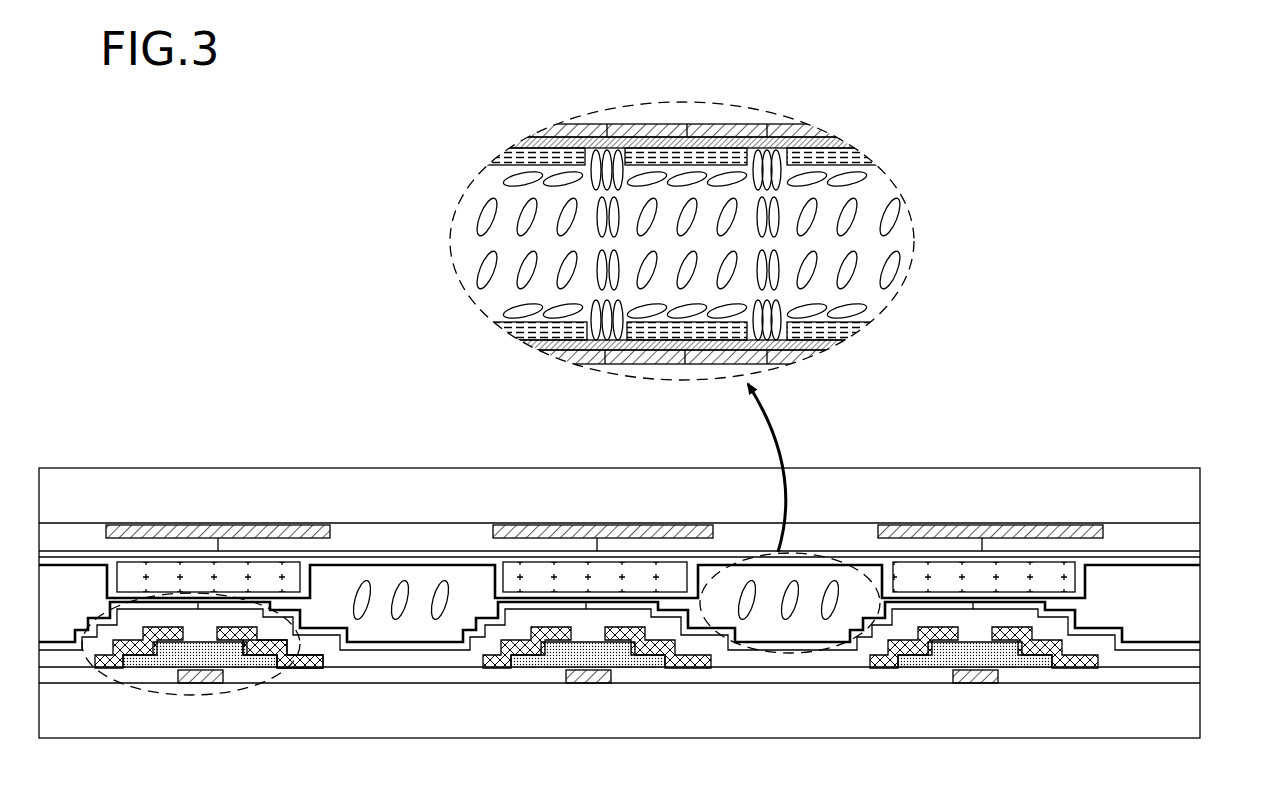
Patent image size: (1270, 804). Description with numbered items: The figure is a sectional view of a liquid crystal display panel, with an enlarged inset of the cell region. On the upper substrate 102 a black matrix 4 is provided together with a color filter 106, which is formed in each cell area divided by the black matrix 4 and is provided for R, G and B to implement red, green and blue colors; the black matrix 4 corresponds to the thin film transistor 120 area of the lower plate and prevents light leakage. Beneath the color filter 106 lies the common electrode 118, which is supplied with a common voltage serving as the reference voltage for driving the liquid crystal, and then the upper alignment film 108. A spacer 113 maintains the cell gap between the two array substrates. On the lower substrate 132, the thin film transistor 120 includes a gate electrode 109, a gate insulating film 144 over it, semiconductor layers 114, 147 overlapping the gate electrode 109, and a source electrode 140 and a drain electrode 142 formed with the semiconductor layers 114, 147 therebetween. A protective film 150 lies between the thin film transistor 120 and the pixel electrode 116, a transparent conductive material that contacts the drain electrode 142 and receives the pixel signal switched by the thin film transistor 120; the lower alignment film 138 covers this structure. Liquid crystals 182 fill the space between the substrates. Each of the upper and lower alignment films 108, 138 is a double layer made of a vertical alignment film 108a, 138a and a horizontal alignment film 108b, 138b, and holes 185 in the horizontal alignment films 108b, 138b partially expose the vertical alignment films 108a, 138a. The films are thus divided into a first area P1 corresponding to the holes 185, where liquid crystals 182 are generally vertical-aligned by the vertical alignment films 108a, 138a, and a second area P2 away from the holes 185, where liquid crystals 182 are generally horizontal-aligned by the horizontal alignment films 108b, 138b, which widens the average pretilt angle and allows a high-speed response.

The black matrix 4 is at (621, 525).
The upper substrate 102 is at (1200, 480).
The color filter 106 is at (1200, 527).
The upper alignment film 108 is at (914, 95).
The vertical alignment film 108a is at (833, 138).
The horizontal alignment film 108b is at (847, 158).
The gate electrode 109 is at (201, 672).
The spacer 113 is at (1077, 580).
The semiconductor layer 114 is at (140, 654).
The pixel electrode 116 is at (662, 366).
The common electrode 118 is at (722, 124).
The thin film transistor 120 is at (102, 686).
The lower substrate 132 is at (1200, 700).
The lower alignment film 138 is at (910, 383).
The vertical alignment film 138a is at (815, 352).
The horizontal alignment film 138b is at (850, 331).
The source electrode 140 is at (173, 656).
The drain electrode 142 is at (245, 630).
The gate insulating film 144 is at (497, 672).
The semiconductor layer 147 is at (262, 656).
The protective film 150 is at (417, 662).
The liquid crystals 182 is at (893, 214).
The holes 185 is at (590, 176).
The first area P1 is at (606, 126).
The second area P2 is at (548, 126).